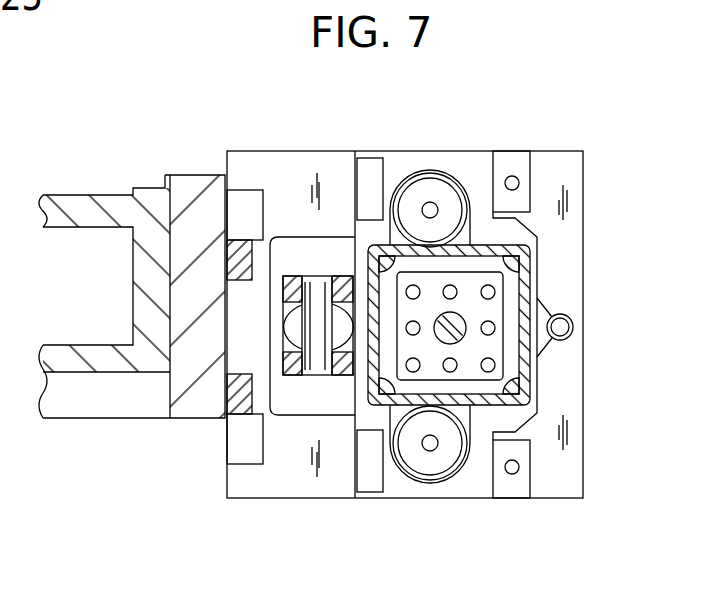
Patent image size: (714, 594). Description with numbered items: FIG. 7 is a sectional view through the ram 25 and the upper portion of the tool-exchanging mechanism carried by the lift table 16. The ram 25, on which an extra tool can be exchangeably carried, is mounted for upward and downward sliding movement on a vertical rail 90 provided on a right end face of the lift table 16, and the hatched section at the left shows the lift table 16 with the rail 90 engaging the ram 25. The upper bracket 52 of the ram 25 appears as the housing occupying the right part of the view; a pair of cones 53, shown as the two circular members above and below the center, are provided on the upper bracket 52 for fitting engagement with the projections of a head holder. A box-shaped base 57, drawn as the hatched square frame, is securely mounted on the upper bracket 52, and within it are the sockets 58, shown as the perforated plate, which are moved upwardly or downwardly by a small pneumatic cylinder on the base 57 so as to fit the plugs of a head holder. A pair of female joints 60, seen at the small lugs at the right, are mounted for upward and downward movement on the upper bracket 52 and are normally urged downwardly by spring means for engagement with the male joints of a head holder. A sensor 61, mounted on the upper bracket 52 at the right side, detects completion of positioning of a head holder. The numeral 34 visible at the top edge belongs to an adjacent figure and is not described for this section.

The lift table 16 is at (188, 193).
The ram 25 is at (262, 182).
The adjacent figure numeral (cut off) 34 is at (96, 14).
The upper bracket 52 is at (400, 166).
The cones 53 is at (452, 200).
The box-shaped base 57 is at (537, 290).
The sockets 58 is at (495, 315).
The female joints 60 is at (520, 182).
The sensor 61 is at (573, 322).
The vertical rail 90 is at (228, 265).